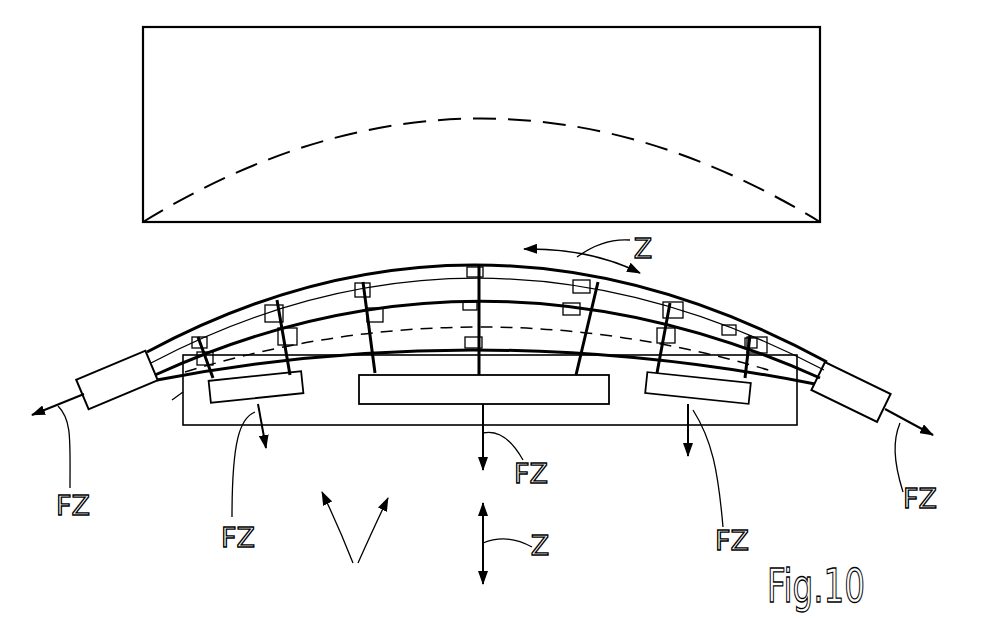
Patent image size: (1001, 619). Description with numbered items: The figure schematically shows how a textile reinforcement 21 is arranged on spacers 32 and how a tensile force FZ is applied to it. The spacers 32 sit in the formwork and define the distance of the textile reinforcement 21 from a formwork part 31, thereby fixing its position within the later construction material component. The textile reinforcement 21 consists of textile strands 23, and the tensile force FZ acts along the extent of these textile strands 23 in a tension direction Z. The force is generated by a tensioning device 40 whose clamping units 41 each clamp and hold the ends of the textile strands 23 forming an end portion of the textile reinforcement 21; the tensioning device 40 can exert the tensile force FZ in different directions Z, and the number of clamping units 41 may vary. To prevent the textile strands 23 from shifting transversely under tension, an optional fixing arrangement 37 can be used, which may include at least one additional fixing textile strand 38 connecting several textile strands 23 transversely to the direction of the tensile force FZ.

The textile reinforcement 21 is at (306, 280).
The textile strand 23 is at (728, 332).
The formwork part 31 is at (792, 118).
The spacer 32 is at (453, 270).
The fixing arrangement 37 is at (172, 400).
The fixing textile strand 38 is at (497, 277).
The tensioning device 40 is at (355, 545).
The clamping unit 41 is at (125, 377).